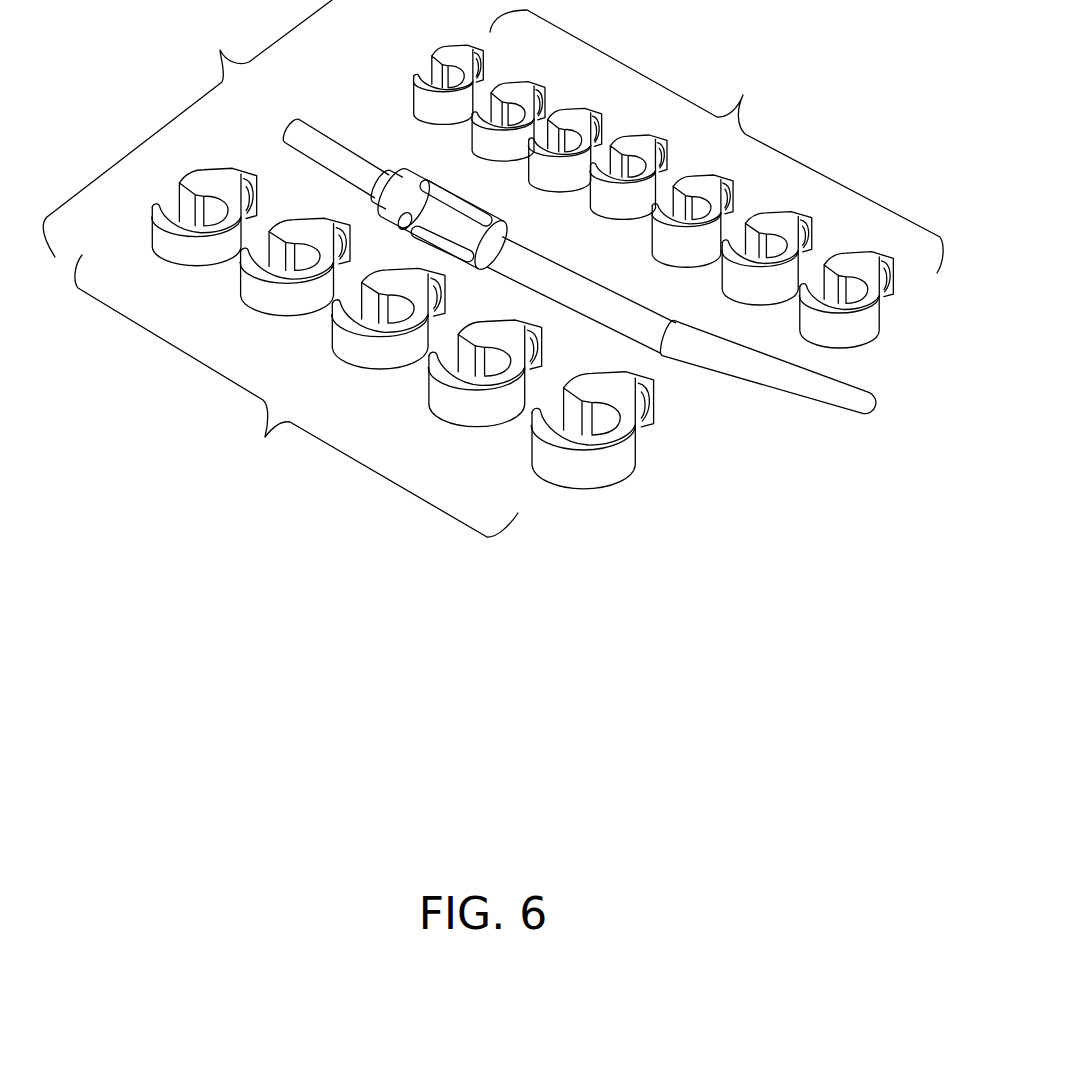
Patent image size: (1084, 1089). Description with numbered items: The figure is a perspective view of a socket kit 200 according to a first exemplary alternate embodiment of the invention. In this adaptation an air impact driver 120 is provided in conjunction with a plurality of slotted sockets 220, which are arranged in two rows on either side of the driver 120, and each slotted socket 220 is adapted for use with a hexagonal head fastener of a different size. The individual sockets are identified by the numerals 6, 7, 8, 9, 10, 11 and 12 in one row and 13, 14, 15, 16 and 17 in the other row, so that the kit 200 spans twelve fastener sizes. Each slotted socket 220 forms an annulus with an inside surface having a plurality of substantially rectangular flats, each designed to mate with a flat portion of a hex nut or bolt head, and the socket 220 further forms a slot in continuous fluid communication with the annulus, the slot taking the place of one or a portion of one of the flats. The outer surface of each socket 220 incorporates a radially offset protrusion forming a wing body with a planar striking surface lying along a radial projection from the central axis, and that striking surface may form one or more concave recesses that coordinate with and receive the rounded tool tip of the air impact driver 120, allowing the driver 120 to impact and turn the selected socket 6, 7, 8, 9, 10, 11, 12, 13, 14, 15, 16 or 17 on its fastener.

The crowfoot wrench head (first size) 6 is at (452, 53).
The crowfoot wrench head (second size) 7 is at (517, 88).
The crowfoot wrench head (third size) 8 is at (575, 117).
The crowfoot wrench head (fourth size) 9 is at (645, 155).
The crowfoot wrench head (fifth size) 10 is at (702, 187).
The crowfoot wrench head (sixth size) 11 is at (774, 225).
The crowfoot wrench head (seventh size) 12 is at (853, 263).
The crowfoot wrench head (eighth size) 13 is at (213, 180).
The crowfoot wrench head (ninth size) 14 is at (305, 230).
The crowfoot wrench head (tenth size) 15 is at (400, 277).
The crowfoot wrench head (eleventh size) 16 is at (500, 333).
The crowfoot wrench head (twelfth size) 17 is at (605, 382).
The air impact driver 120 is at (808, 400).
The socket kit 200 is at (187, 128).
The slotted socket 220 is at (509, 273).